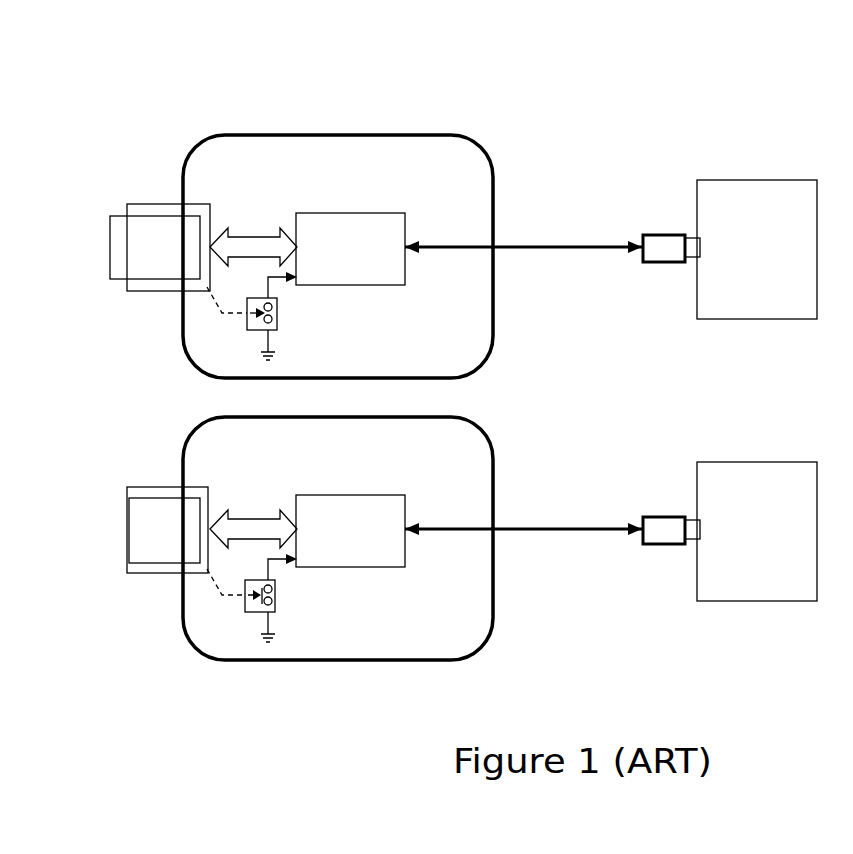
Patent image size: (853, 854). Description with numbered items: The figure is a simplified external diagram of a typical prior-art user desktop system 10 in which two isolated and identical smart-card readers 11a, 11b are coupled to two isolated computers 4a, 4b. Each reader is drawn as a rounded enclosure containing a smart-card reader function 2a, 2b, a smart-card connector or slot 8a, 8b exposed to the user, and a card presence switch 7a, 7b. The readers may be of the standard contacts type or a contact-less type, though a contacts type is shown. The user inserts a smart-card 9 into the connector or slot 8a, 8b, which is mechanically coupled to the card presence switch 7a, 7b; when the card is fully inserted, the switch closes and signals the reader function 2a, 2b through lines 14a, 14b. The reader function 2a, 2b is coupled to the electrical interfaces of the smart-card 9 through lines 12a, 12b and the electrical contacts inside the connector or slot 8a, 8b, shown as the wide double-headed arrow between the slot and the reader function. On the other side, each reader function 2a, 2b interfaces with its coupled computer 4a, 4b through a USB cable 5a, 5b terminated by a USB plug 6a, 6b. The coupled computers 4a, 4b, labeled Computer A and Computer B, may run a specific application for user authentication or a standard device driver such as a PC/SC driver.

The user desktop system 10 is at (84, 66).
The smart-card reader 11a is at (493, 346).
The smart-card reader 11b is at (493, 628).
The smart-card connector or slot 8a is at (163, 204).
The smart-card connector or slot 8b is at (163, 487).
The smart-card 9 is at (110, 242).
The lines 12a is at (262, 236).
The lines 12b is at (262, 518).
The smart-card reader function 2a is at (345, 213).
The smart-card reader function 2b is at (345, 495).
The lines 14a is at (266, 283).
The lines 14b is at (266, 565).
The card presence switch 7a is at (278, 316).
The card presence switch 7b is at (276, 598).
The USB cable 5a is at (560, 245).
The USB cable 5b is at (560, 527).
The USB plug 6a is at (665, 235).
The USB plug 6b is at (665, 517).
The computer 4a is at (750, 180).
The computer 4b is at (750, 462).